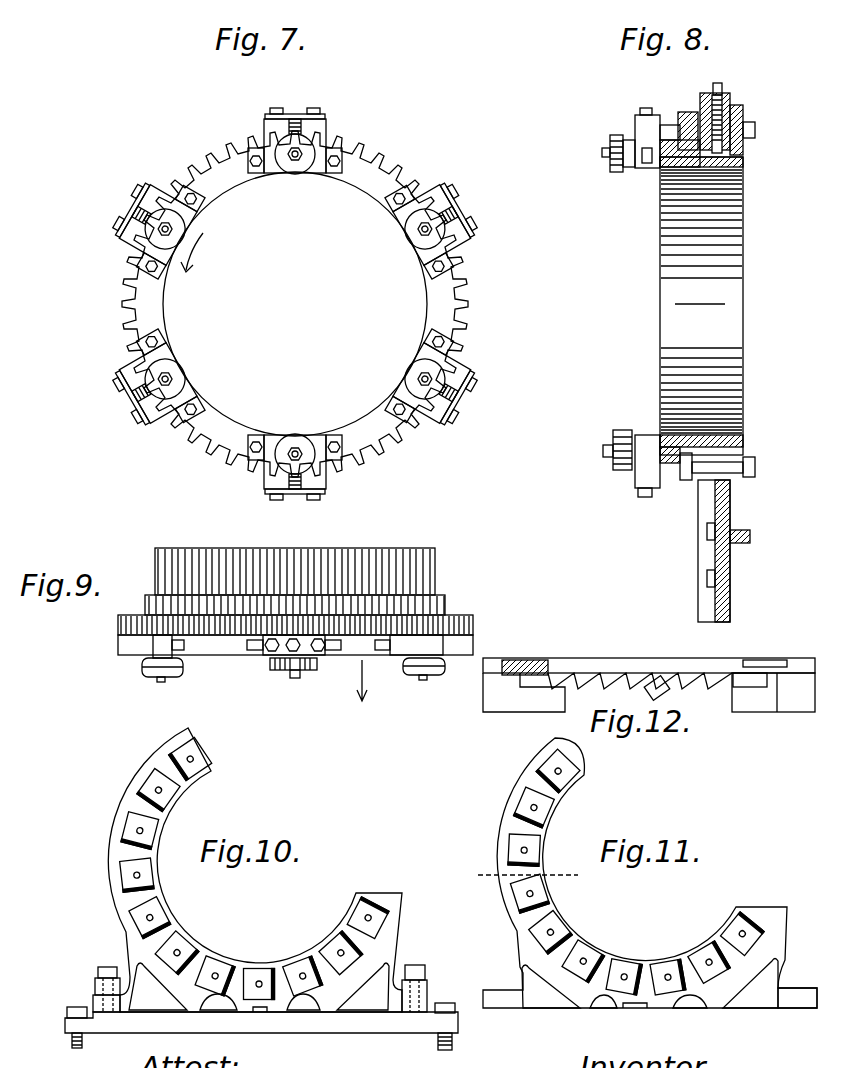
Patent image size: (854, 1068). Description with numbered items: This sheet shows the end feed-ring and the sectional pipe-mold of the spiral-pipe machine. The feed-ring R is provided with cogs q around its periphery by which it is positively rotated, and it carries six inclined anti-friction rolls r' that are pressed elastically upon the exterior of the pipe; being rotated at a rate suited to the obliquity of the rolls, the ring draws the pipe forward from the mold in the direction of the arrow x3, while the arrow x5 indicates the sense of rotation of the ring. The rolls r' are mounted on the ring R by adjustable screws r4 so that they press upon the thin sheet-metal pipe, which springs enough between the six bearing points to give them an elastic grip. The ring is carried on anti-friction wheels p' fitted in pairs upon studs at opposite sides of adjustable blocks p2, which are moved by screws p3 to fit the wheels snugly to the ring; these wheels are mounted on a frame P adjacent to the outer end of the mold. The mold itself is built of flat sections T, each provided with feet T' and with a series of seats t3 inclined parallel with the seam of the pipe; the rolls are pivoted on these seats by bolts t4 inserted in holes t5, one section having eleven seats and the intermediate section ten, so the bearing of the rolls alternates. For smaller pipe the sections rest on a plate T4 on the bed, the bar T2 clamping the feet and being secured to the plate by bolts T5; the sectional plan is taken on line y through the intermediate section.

In FIG. 7, the feed-ring R is at (163, 308).
In FIG. 8, the feed-ring R is at (660, 313).
In FIG. 9, the feed-ring R is at (268, 560).
In FIG. 7, the cogs q is at (129, 294).
In FIG. 8, the cogs q is at (672, 124).
In FIG. 9, the cogs q is at (474, 616).
In FIG. 7, the anti-friction rolls r' is at (288, 304).
In FIG. 8, the anti-friction rolls r' is at (627, 316).
In FIG. 9, the anti-friction rolls r' is at (293, 671).
In FIG. 7, the adjustable screws r4 is at (450, 200).
In FIG. 8, the adjustable screws r4 is at (641, 114).
In FIG. 7, the direction of rotation x5 is at (205, 252).
In FIG. 9, the arrow x3 is at (370, 694).
In FIG. 8, the anti-friction wheels p' is at (730, 298).
In FIG. 8, the adjustable blocks p2 is at (756, 130).
In FIG. 8, the screws p3 is at (725, 96).
In FIG. 8, the frame P is at (732, 512).
In FIG. 12, the mold section T is at (649, 671).
In FIG. 10, the mold section T is at (237, 870).
In FIG. 11, the mold section T is at (648, 873).
In FIG. 12, the feet T' is at (773, 686).
In FIG. 10, the feet T' is at (70, 1013).
In FIG. 11, the feet T' is at (797, 1014).
In FIG. 10, the clamping bar T2 is at (427, 985).
In FIG. 10, the plate T4 is at (365, 1022).
In FIG. 10, the bolts T5 is at (105, 965).
In FIG. 12, the seats t3 is at (754, 688).
In FIG. 10, the seats t3 is at (160, 792).
In FIG. 11, the seats t3 is at (668, 975).
In FIG. 12, the bolts t4 is at (657, 680).
In FIG. 10, the holes t5 is at (260, 980).
In FIG. 11, the holes t5 is at (565, 772).
In FIG. 11, the section line y is at (528, 876).